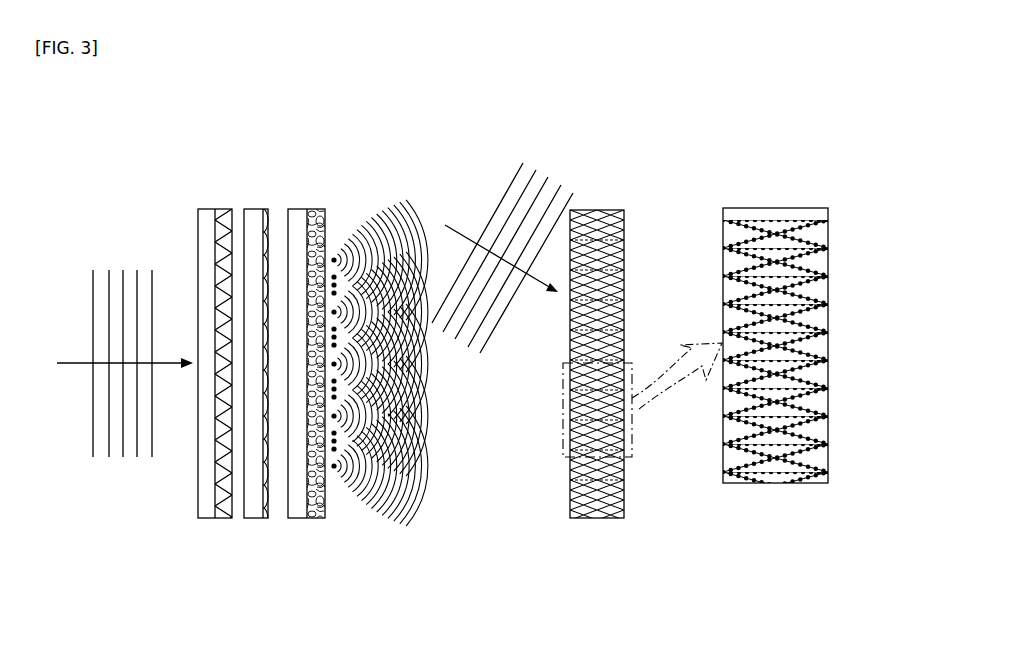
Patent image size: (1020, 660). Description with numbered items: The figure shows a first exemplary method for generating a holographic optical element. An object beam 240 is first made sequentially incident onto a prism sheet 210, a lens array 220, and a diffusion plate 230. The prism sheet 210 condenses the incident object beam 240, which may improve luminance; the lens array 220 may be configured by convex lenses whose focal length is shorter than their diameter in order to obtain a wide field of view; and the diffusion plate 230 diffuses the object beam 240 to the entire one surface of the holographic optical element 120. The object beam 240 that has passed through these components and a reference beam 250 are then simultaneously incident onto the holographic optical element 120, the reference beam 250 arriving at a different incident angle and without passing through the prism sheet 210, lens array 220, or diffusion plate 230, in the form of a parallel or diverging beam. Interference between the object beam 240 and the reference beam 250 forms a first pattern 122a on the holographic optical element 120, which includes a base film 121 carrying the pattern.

The object beam 240 is at (122, 254).
The prism sheet 210 is at (223, 518).
The lens array 220 is at (266, 518).
The diffusion plate 230 is at (313, 518).
The reference beam 250 is at (496, 176).
The holographic optical element 120 is at (595, 518).
The base film 121 is at (820, 345).
The first pattern 122a is at (820, 420).